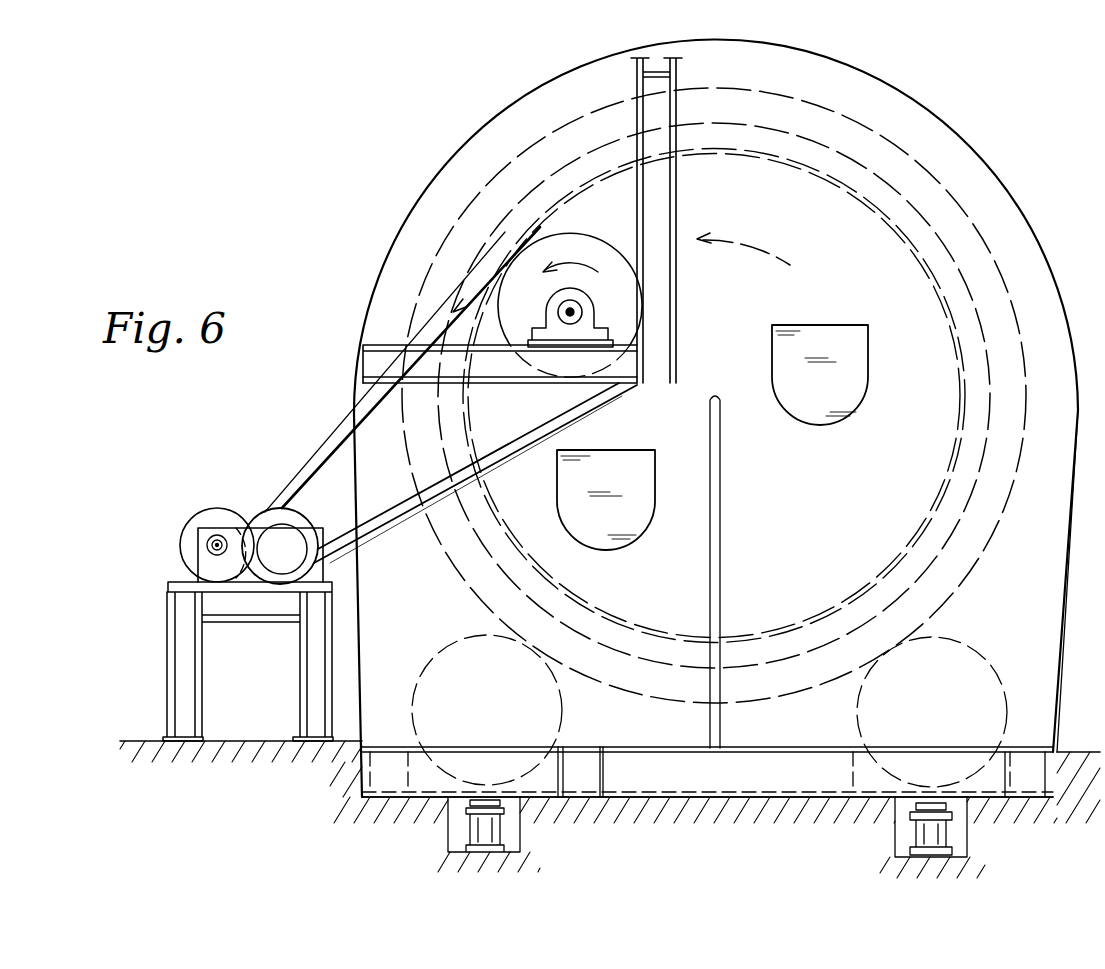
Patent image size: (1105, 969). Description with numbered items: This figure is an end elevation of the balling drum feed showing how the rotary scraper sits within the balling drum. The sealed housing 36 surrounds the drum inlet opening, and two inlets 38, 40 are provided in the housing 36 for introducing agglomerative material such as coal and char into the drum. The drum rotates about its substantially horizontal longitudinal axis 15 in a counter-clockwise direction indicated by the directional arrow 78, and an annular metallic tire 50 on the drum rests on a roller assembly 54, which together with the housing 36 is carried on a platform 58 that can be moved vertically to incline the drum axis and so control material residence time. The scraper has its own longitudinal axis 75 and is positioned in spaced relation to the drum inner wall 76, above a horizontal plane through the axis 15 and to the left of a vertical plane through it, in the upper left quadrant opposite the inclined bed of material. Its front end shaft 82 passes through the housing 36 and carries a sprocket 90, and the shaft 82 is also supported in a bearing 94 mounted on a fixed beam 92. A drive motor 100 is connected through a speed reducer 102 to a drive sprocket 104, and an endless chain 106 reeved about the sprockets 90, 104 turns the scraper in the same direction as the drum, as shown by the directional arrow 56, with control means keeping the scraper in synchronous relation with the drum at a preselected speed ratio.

The longitudinal axis 15 is at (716, 396).
The sealed housing 36 is at (972, 155).
The inlet 38 is at (862, 360).
The inlet 40 is at (630, 546).
The annular metallic tire 50 is at (975, 568).
The roller assembly 54 is at (985, 650).
The directional arrow 56 is at (578, 265).
The platform 58 is at (702, 786).
The longitudinal axis 75 is at (574, 340).
The drum inner wall 76 is at (778, 163).
The directional arrow 78 is at (753, 241).
The front end shaft 82 is at (587, 309).
The sprocket 90 is at (587, 224).
The fixed beam 92 is at (525, 385).
The bearing 94 is at (547, 312).
The drive motor 100 is at (192, 545).
The speed reducer 102 is at (303, 511).
The drive sprocket 104 is at (269, 528).
The endless chain 106 is at (380, 534).